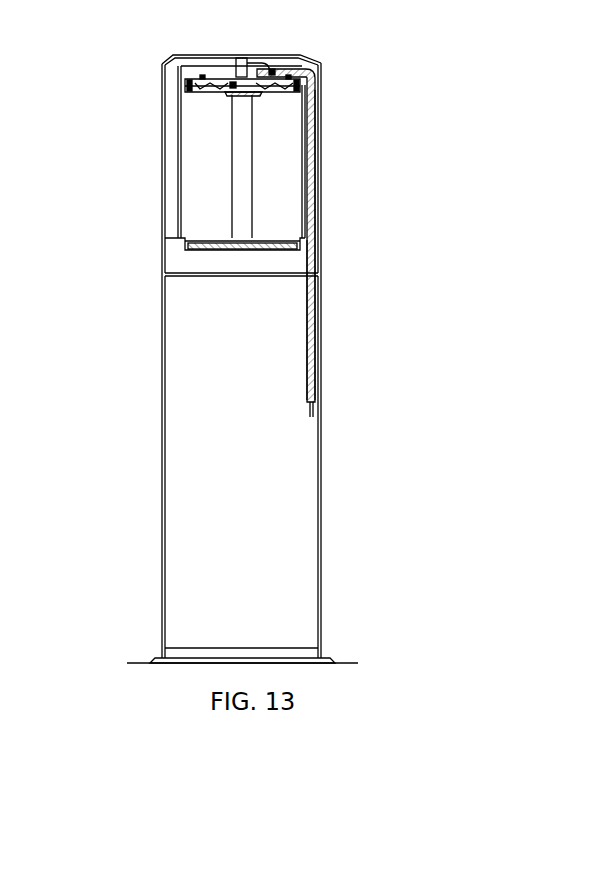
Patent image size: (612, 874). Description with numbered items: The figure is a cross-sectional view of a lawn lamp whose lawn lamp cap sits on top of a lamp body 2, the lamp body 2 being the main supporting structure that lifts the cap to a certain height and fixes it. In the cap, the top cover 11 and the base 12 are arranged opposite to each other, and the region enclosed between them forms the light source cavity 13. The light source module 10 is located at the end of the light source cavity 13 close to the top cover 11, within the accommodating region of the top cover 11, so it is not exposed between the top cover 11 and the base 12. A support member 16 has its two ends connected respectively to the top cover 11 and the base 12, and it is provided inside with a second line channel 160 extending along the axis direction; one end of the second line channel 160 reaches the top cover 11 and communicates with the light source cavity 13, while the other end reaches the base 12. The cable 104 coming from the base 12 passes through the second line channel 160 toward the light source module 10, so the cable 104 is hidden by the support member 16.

The lamp body 2 is at (162, 460).
The light source module 10 is at (162, 72).
The top cover 11 is at (190, 54).
The base 12 is at (173, 260).
The light source cavity 13 is at (190, 182).
The support member 16 is at (322, 118).
The cable 104 is at (311, 213).
The second line channel 160 is at (319, 166).